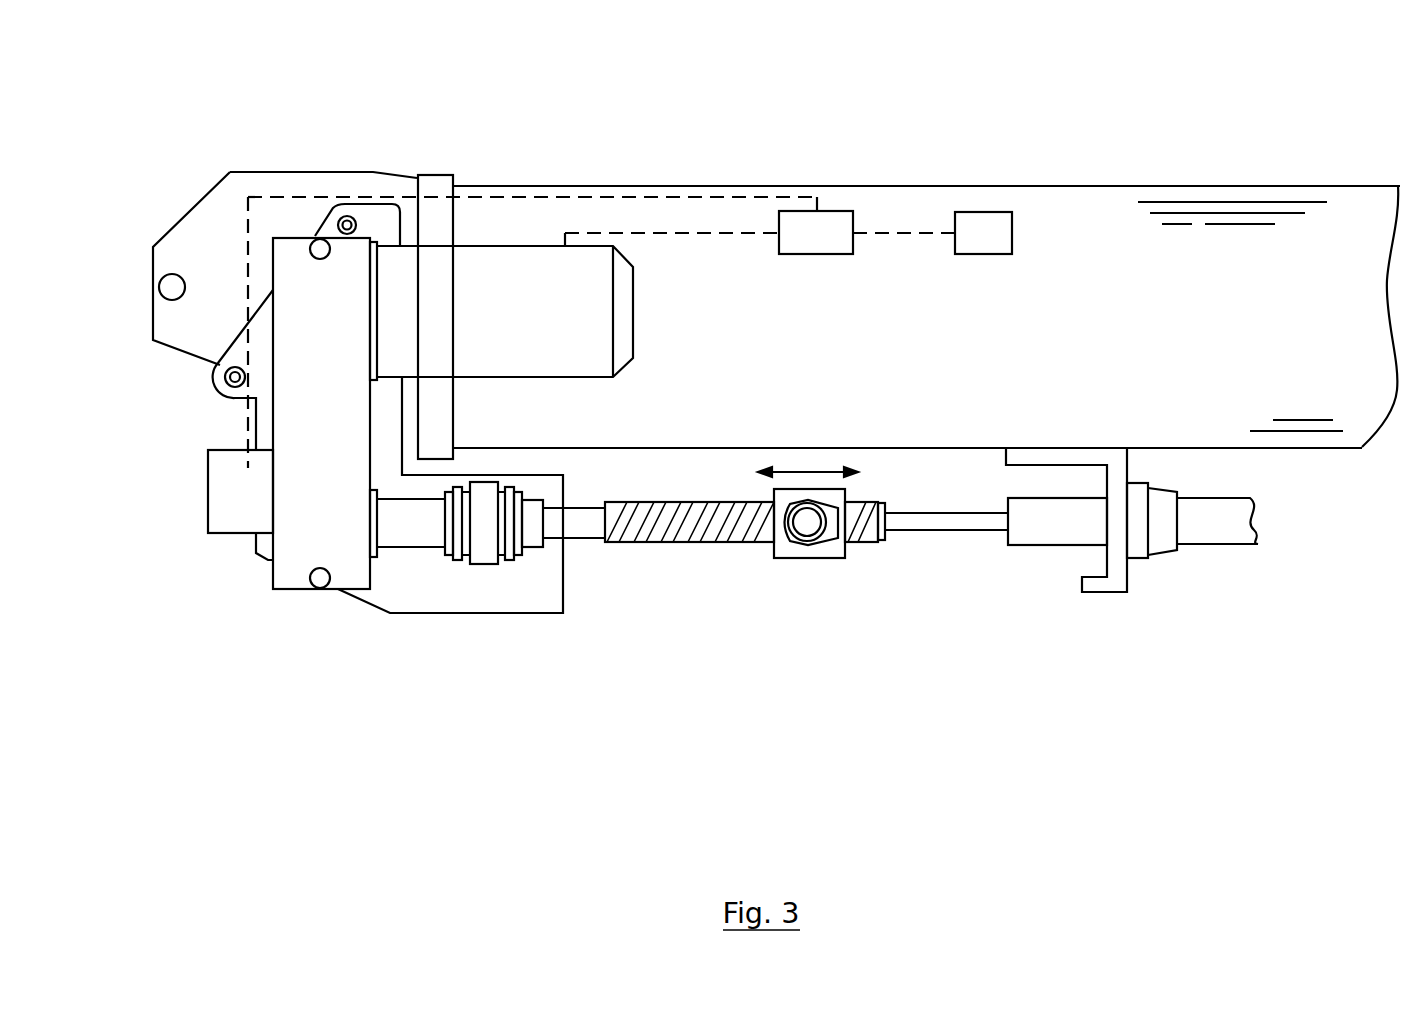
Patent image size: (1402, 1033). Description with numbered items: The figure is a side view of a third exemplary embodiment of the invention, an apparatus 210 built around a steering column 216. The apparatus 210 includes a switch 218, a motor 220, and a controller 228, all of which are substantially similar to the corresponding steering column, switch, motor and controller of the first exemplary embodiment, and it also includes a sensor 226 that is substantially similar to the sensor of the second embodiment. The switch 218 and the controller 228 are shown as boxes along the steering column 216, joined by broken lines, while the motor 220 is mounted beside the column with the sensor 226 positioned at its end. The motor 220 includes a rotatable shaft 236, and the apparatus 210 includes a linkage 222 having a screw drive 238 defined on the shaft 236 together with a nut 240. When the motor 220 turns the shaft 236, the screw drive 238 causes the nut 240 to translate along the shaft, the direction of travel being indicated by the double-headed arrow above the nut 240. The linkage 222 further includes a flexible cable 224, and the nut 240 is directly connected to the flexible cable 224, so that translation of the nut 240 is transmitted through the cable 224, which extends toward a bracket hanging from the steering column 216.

The apparatus 210 is at (955, 740).
The steering column 216 is at (1157, 148).
The switch 218 is at (993, 222).
The motor 220 is at (490, 308).
The linkage 222 is at (798, 572).
The flexible cable 224 is at (942, 523).
The sensor 226 is at (217, 487).
The controller 228 is at (825, 225).
The rotatable shaft 236 is at (578, 525).
The screw drive 238 is at (662, 540).
The nut 240 is at (838, 555).